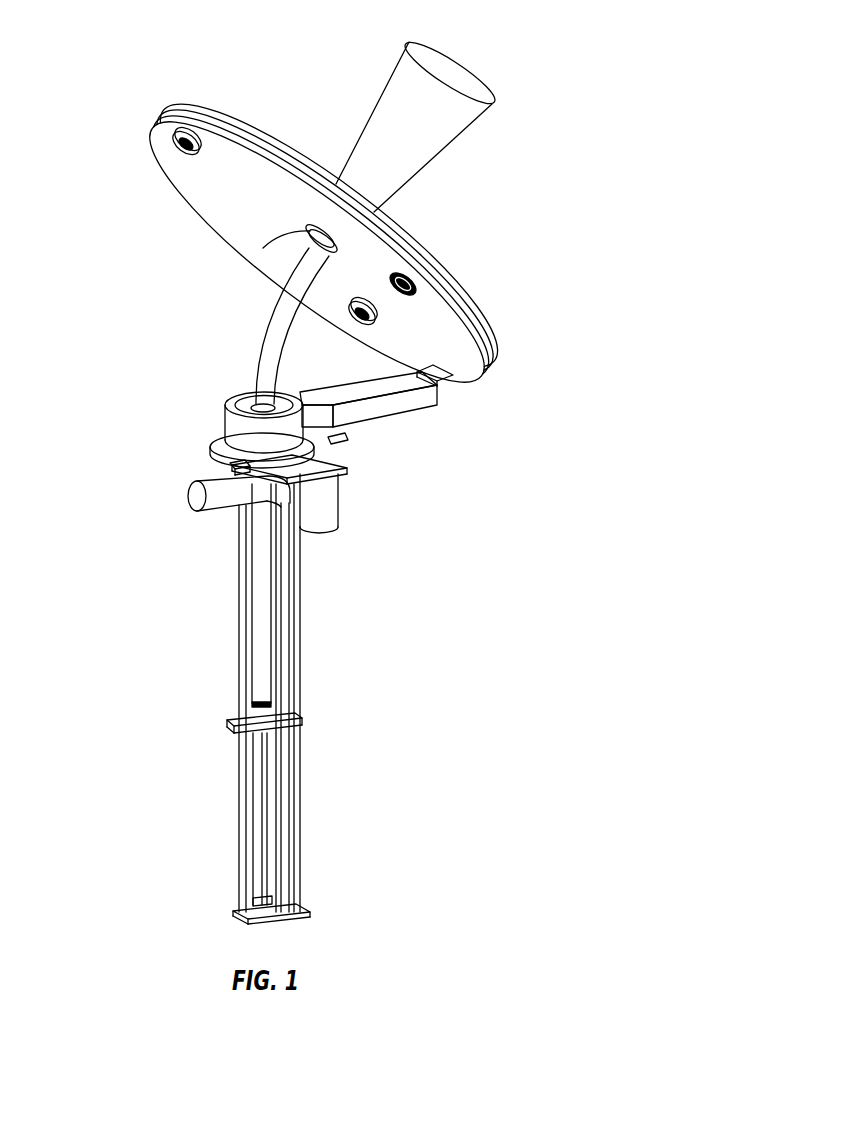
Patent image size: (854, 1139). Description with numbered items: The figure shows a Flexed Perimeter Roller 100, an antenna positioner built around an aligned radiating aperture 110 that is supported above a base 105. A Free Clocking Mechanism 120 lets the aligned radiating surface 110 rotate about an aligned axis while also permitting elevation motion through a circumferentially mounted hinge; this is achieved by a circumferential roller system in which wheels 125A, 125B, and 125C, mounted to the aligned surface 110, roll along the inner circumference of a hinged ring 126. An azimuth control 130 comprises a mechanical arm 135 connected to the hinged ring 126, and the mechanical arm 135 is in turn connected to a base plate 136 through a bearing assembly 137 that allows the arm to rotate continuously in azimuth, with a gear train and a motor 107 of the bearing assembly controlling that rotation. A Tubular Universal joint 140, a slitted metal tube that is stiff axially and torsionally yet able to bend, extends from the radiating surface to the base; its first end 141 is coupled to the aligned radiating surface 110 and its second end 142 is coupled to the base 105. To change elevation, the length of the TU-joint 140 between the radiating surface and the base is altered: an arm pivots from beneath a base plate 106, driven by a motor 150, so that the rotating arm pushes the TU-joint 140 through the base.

The Flexed Perimeter Roller 100 is at (630, 105).
The base 105 is at (300, 767).
The base plate 106 is at (315, 418).
The motor 107 is at (332, 533).
The aligned radiating aperture 110 is at (162, 100).
The Free Clocking Mechanism 120 is at (492, 380).
The wheel 125A is at (423, 264).
The wheel 125B is at (197, 140).
The wheel 125C is at (350, 318).
The hinged ring 126 is at (497, 350).
The azimuth control 130 is at (371, 501).
The mechanical arm 135 is at (423, 405).
The base plate 136 is at (343, 440).
The bearing assembly 137 is at (227, 418).
The Tubular Universal joint 140 is at (250, 344).
The first end 141 is at (262, 249).
The second end 142 is at (278, 704).
The motor 150 is at (193, 507).